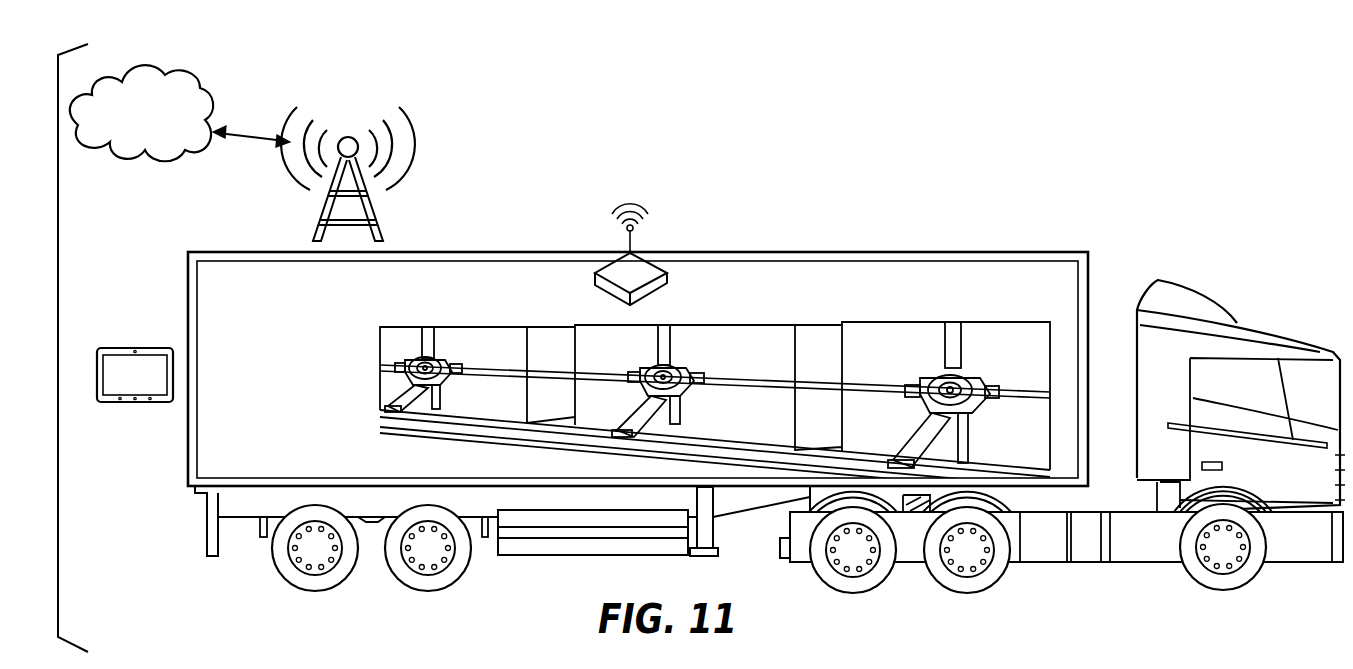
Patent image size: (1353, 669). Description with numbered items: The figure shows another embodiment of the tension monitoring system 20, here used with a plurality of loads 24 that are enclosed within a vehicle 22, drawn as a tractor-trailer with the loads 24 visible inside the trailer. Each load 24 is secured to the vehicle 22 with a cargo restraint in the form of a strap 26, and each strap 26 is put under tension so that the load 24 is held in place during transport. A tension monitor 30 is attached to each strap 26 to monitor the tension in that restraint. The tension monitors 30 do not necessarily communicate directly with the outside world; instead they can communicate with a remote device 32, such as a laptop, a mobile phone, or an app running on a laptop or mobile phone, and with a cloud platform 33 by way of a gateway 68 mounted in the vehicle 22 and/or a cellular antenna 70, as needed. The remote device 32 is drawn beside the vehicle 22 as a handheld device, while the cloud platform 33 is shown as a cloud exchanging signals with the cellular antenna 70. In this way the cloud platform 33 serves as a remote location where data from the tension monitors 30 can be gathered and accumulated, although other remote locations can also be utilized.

The tension monitoring system 20 is at (638, 451).
The vehicle 22 is at (1147, 541).
The load 24 is at (487, 350).
The strap 26 is at (400, 408).
The tension monitor 30 is at (413, 362).
The remote device 32 is at (137, 388).
The cloud platform 33 is at (190, 85).
The gateway 68 is at (640, 268).
The cellular antenna 70 is at (300, 180).